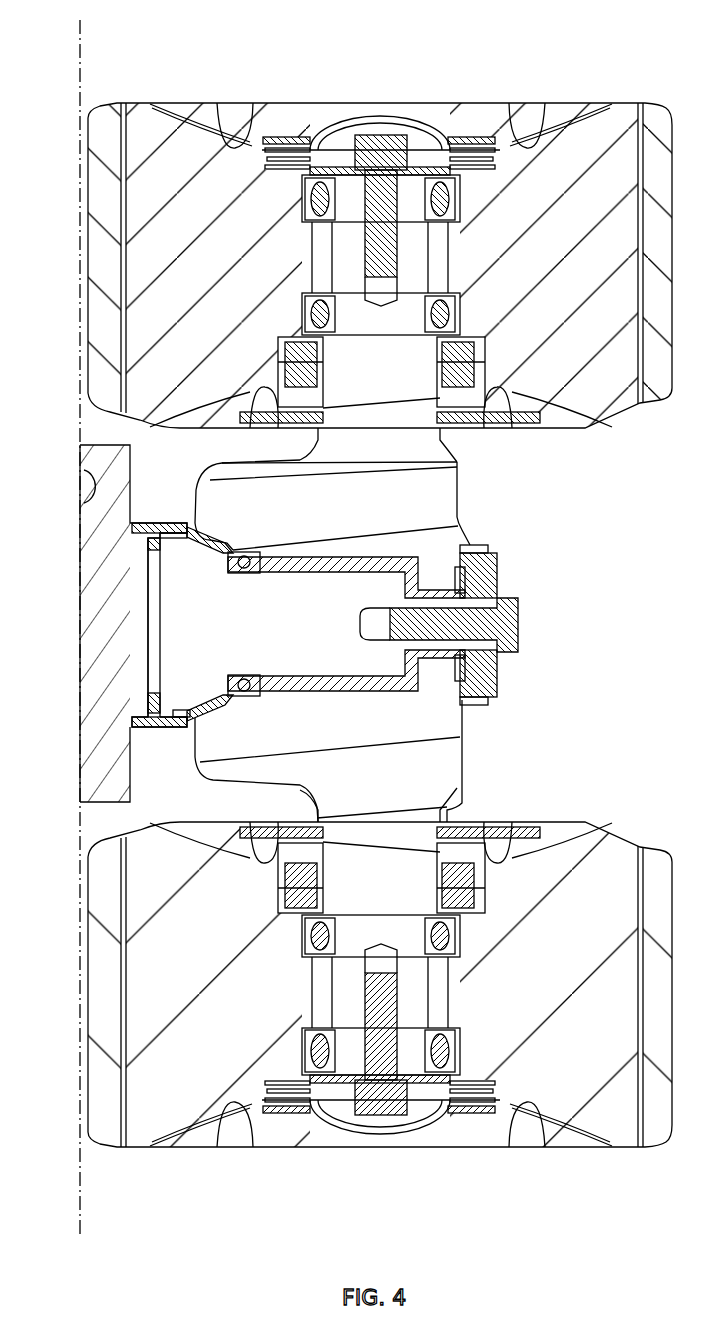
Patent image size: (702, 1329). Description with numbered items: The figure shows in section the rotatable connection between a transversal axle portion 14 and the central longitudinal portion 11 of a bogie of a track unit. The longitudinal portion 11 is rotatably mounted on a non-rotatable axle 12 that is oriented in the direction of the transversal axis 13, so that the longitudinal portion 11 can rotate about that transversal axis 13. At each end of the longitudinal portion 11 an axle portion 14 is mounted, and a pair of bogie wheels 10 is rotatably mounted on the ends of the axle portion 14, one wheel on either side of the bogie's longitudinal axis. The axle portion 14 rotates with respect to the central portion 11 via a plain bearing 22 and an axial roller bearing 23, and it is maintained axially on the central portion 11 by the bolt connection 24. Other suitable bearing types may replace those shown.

The bogie wheel 10 is at (619, 172).
The central longitudinal portion 11 is at (303, 645).
The non-rotatable axle 12 is at (110, 595).
The transversal axis 13 is at (78, 47).
The transversal axle portion 14 is at (260, 500).
The plain bearing 22 is at (345, 563).
The axial roller bearing 23 is at (463, 577).
The bolt connection 24 is at (505, 625).